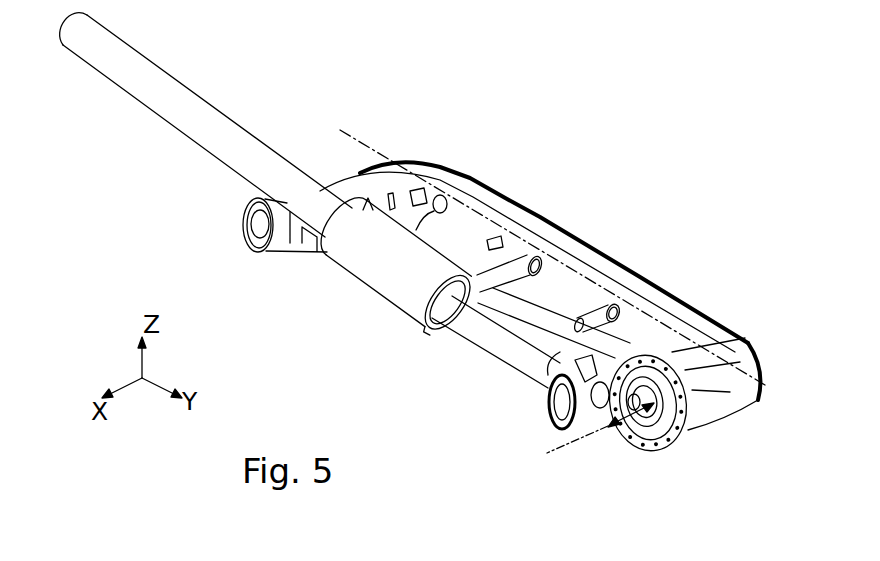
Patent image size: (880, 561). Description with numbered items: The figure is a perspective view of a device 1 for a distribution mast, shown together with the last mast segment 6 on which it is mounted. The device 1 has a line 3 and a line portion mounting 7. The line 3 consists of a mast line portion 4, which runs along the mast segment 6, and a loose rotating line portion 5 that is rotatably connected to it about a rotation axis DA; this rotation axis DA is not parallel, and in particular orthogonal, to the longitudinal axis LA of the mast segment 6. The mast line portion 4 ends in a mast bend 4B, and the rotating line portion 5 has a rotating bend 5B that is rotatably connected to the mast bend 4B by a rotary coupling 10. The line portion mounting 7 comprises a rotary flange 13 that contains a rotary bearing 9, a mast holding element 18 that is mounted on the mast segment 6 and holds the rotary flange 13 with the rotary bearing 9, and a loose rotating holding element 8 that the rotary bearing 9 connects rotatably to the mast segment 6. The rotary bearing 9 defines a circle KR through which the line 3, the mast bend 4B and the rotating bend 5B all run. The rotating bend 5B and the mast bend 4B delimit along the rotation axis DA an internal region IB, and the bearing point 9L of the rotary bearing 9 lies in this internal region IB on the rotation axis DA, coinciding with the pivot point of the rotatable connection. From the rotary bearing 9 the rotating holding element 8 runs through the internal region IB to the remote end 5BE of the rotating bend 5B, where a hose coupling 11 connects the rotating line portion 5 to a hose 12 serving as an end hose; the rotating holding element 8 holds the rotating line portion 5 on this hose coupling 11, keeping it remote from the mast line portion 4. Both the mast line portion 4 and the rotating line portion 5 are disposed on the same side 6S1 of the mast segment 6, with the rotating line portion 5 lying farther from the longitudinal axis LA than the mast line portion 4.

The device 1 is at (672, 73).
The hose 12 is at (90, 46).
The rotating line portion 5 is at (140, 86).
The line 3 is at (185, 116).
The mast segment 6 is at (520, 213).
The mast line portion 4 is at (527, 317).
The same side 6S1 is at (557, 330).
The internal region IB is at (650, 357).
The rotary bearing 9 is at (673, 357).
The mast bend 4B is at (745, 340).
The line portion mounting 7 is at (757, 345).
The circle KR is at (753, 363).
The rotary coupling 10 is at (688, 410).
The rotary flange 13 is at (665, 442).
The mast holding element 18 is at (720, 397).
The longitudinal axis LA is at (364, 135).
The rotating holding element 8 is at (578, 372).
The hose coupling 11 is at (550, 392).
The end of the rotating bend 5BE is at (550, 417).
The rotating bend 5B is at (615, 428).
The rotation axis DA is at (557, 447).
The bearing point 9L is at (633, 408).